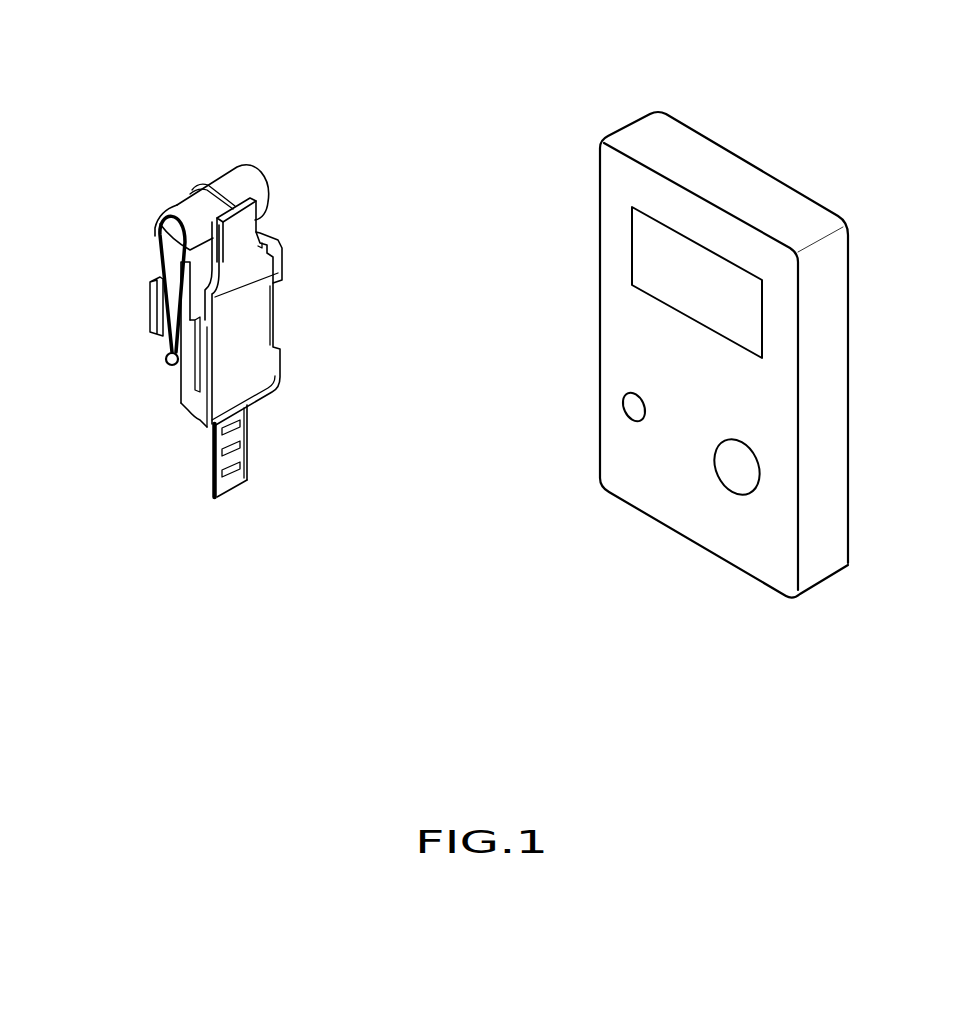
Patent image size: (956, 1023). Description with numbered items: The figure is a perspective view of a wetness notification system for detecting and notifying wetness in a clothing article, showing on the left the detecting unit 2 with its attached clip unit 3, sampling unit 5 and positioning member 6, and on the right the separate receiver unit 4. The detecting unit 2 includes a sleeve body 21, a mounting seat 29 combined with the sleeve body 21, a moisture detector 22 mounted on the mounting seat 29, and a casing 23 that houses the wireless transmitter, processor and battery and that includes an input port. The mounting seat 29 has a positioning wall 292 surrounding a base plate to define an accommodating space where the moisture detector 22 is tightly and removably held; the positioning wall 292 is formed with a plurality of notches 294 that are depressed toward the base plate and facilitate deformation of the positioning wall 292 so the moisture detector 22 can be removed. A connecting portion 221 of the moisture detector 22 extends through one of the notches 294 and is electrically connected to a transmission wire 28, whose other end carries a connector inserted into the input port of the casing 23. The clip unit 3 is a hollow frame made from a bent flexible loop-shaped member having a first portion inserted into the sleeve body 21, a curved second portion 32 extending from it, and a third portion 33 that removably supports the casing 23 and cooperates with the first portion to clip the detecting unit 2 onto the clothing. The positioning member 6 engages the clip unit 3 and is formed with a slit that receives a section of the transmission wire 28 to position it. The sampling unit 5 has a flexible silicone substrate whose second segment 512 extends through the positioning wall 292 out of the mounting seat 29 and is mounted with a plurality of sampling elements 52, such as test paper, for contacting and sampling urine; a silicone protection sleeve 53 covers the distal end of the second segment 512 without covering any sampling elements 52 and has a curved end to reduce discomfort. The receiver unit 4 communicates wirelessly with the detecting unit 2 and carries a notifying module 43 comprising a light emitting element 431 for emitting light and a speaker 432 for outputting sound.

The detecting unit 2 is at (168, 431).
The clip unit 3 is at (145, 259).
The receiver unit 4 is at (733, 138).
The sampling unit 5 is at (206, 520).
The positioning member 6 is at (255, 180).
The sleeve body 21 is at (185, 388).
The moisture detector 22 is at (283, 325).
The casing 23 is at (152, 294).
The transmission wire 28 is at (193, 188).
The mounting seat 29 is at (297, 262).
The curved second portion 32 is at (157, 243).
The third portion 33 is at (165, 360).
The notifying module 43 is at (618, 604).
The sampling elements 52 is at (243, 424).
The protection sleeve 53 is at (233, 488).
The connecting portion 221 is at (238, 225).
The positioning wall 292 is at (197, 417).
The notches 294 is at (197, 333).
The light emitting element 431 is at (634, 405).
The speaker 432 is at (737, 465).
The second segment 512 is at (243, 455).